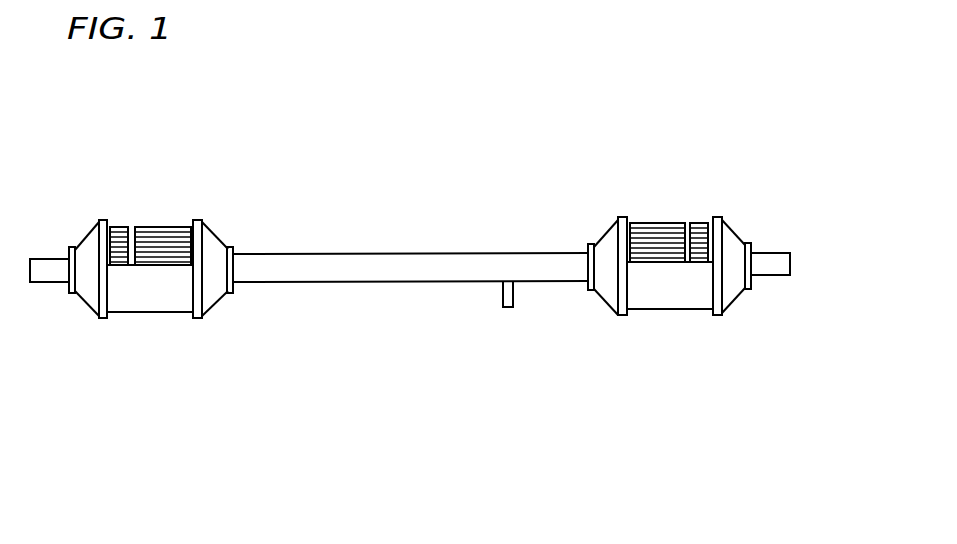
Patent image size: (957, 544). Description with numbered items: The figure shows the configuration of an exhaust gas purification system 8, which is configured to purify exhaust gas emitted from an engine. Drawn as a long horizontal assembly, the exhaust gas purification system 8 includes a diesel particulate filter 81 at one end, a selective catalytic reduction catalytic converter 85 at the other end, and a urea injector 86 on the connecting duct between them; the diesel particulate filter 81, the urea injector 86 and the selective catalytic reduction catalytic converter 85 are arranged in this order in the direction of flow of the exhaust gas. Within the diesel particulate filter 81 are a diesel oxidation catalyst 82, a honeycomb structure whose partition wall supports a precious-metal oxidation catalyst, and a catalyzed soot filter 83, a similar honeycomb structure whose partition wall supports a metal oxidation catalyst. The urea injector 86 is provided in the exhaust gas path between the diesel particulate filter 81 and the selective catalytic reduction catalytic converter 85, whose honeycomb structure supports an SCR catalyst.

The exhaust gas purification system 8 is at (305, 171).
The diesel particulate filter (DPF) 81 is at (168, 387).
The diesel oxidation catalyst (DOC) 82 is at (117, 257).
The catalyzed soot filter (CSF) 83 is at (163, 257).
The selective catalytic reduction (SCR) catalytic converter 85 is at (667, 323).
The urea injector 86 is at (500, 297).